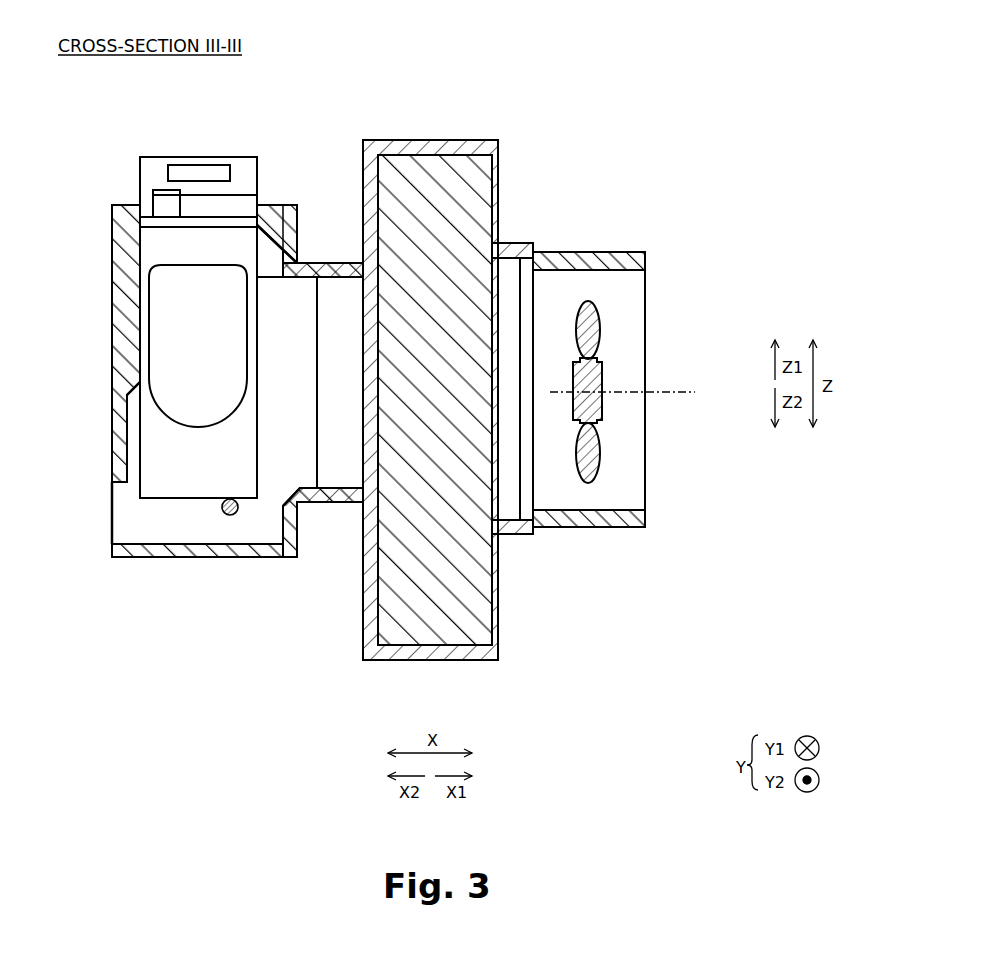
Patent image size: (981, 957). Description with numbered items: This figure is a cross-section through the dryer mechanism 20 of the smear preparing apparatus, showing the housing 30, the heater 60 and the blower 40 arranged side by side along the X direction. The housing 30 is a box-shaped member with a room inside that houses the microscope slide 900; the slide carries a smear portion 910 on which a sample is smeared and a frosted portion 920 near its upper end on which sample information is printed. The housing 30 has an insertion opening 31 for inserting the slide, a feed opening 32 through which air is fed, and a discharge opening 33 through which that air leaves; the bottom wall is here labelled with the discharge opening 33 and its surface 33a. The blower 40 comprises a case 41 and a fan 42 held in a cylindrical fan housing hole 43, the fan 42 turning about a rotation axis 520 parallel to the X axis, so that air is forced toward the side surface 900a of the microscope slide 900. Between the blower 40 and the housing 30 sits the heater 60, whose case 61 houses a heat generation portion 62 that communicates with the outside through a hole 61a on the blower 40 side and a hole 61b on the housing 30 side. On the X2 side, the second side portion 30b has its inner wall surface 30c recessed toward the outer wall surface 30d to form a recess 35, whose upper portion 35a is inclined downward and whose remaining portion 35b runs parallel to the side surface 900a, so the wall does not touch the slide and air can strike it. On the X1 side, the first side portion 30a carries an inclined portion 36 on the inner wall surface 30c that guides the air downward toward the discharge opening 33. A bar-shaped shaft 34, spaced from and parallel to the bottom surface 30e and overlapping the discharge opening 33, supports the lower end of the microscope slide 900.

The dryer mechanism 20 is at (420, 58).
The housing 30 is at (110, 246).
The first side portion 30a is at (274, 207).
The second side portion 30b is at (117, 266).
The inner wall surface 30c is at (256, 248).
The outer wall surface 30d is at (113, 321).
The bottom surface 30e is at (235, 543).
The insertion opening 31 is at (151, 202).
The feed opening 32 is at (312, 487).
The discharge opening 33 is at (197, 550).
The bottom inner surface 33a is at (122, 543).
The shaft 34 is at (238, 511).
The recess 35 is at (129, 410).
The upper portion of recess 35a is at (128, 388).
The portion other than upper portion of recess 35b is at (131, 455).
The inclined portion 36 is at (294, 499).
The blower 40 is at (594, 238).
The case 41 is at (648, 258).
The fan 42 is at (603, 332).
The fan housing hole 43 is at (618, 272).
The heater 60 is at (434, 138).
The case 61 is at (503, 162).
The hole 61a is at (525, 268).
The hole 61b is at (347, 278).
The heat generation portion 62 is at (455, 597).
The rotation axis 520 is at (690, 394).
The microscope slide 900 is at (181, 154).
The side surface 900a is at (260, 185).
The smear portion 910 is at (190, 290).
The frosted portion 920 is at (168, 172).